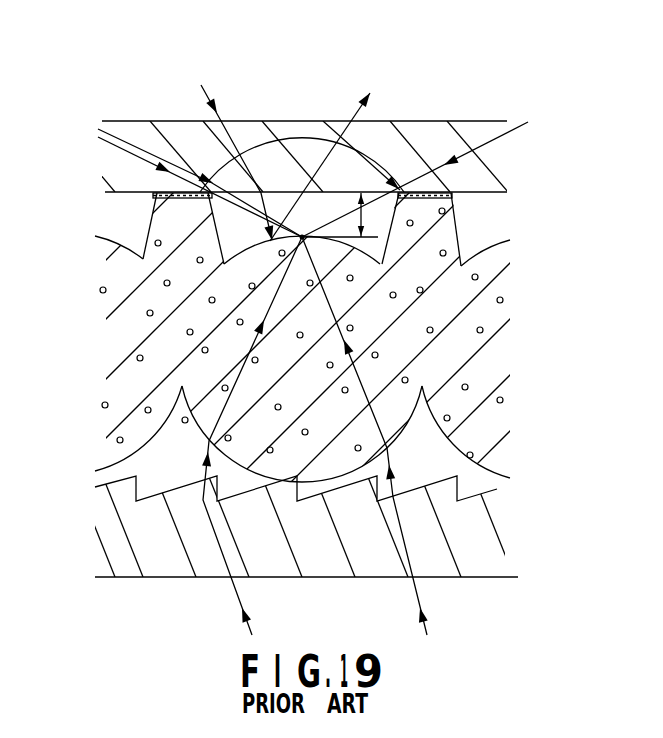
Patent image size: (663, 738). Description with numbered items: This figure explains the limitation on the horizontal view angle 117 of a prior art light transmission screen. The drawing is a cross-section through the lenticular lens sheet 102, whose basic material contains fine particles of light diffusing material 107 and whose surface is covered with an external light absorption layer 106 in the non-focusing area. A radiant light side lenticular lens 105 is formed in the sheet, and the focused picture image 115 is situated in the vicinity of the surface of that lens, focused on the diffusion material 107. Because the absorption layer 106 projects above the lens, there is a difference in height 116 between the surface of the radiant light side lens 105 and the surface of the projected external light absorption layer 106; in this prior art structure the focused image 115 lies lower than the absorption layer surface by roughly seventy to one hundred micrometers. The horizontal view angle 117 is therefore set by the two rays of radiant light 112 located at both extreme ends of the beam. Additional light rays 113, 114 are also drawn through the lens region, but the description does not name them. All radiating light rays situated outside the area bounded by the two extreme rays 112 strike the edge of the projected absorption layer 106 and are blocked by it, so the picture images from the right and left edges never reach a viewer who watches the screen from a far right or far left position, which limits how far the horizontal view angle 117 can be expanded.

The lenticular lens sheet 102 is at (486, 366).
The radiant light side lenticular lens 105 is at (257, 247).
The external light absorption layer 106 is at (450, 190).
The light diffusing material 107 is at (412, 323).
The radiant light 112 is at (102, 133).
The light ray 113 is at (229, 151).
The emergent light ray 114 is at (333, 155).
The focused picture image 115 is at (303, 235).
The difference in height 116 is at (398, 214).
The horizontal view angle 117 is at (262, 142).